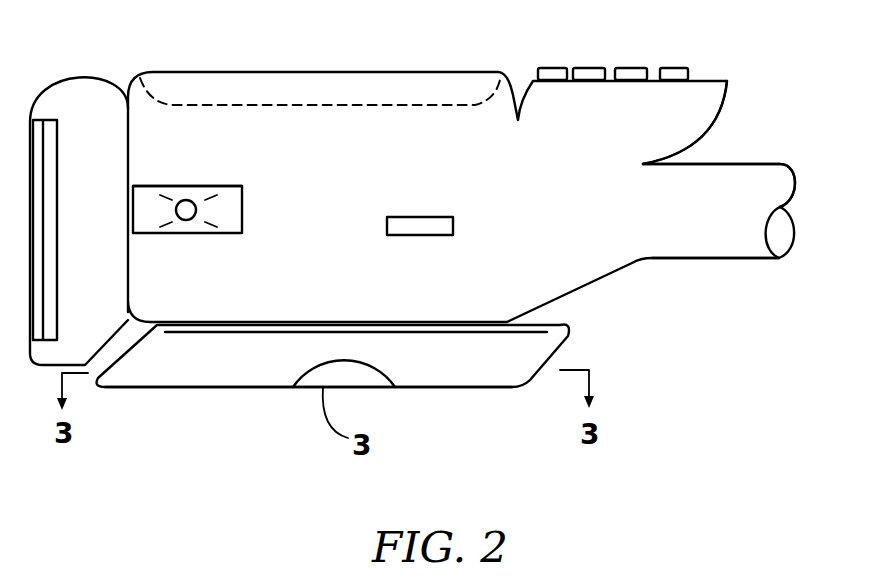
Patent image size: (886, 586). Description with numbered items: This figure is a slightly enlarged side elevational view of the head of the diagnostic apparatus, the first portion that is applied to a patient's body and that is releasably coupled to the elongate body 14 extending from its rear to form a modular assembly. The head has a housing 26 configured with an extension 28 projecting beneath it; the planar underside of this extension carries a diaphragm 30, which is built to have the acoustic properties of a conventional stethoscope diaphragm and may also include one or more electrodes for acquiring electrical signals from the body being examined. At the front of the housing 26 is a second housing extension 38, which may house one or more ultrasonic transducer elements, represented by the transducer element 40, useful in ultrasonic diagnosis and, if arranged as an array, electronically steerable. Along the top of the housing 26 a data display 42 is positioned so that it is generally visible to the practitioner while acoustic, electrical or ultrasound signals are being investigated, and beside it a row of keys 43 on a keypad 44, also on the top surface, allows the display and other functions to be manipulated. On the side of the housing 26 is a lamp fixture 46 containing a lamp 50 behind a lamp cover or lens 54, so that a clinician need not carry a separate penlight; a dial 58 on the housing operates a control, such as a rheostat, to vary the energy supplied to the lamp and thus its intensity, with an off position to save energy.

The elongate body 14 is at (751, 140).
The housing 26 is at (501, 192).
The extension 28 is at (236, 376).
The diaphragm 30 is at (155, 390).
The second housing extension 38 is at (77, 78).
The ultrasonic transducer element 40 is at (60, 205).
The data display 42 is at (260, 72).
The keys 43 is at (675, 67).
The keypad 44 is at (712, 80).
The lamp fixture 46 is at (200, 186).
The lamp 50 is at (192, 218).
The lamp cover or lens 54 is at (137, 184).
The dial 58 is at (417, 235).